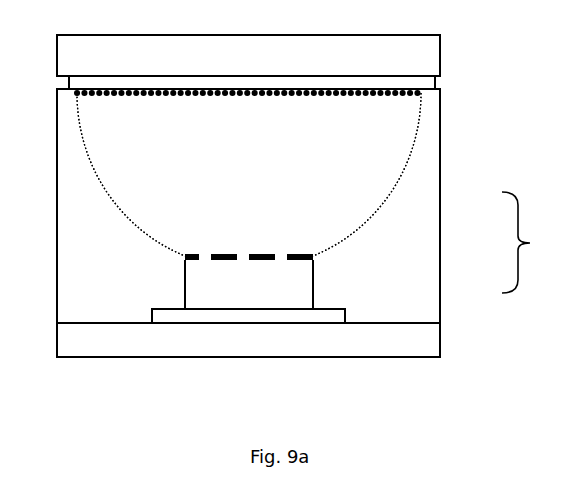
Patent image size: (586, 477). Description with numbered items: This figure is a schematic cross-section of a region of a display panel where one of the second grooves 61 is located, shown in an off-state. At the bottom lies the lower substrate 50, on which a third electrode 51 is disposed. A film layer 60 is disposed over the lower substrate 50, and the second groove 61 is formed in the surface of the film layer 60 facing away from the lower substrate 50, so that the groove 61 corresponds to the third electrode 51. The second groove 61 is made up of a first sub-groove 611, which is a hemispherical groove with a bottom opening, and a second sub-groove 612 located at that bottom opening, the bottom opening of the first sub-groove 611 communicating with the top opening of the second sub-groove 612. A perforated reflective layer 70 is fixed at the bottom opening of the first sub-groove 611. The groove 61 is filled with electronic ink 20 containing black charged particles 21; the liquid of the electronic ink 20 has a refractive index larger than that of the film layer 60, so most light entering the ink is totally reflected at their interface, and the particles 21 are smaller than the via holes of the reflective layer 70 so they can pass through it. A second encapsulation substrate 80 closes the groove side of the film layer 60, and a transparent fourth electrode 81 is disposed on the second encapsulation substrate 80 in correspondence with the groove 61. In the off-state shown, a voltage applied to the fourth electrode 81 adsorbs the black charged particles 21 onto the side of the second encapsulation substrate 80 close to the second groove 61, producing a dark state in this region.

The second encapsulation substrate 80 is at (419, 57).
The transparent fourth electrode 81 is at (228, 83).
The black charged particle 21 is at (423, 95).
The electronic ink 20 is at (375, 153).
The film layer 60 is at (78, 188).
The first sub-groove 611 is at (387, 205).
The second sub-groove 612 is at (303, 283).
The second groove 61 is at (530, 242).
The perforated reflective layer 70 is at (185, 256).
The third electrode 51 is at (240, 314).
The lower substrate 50 is at (423, 340).